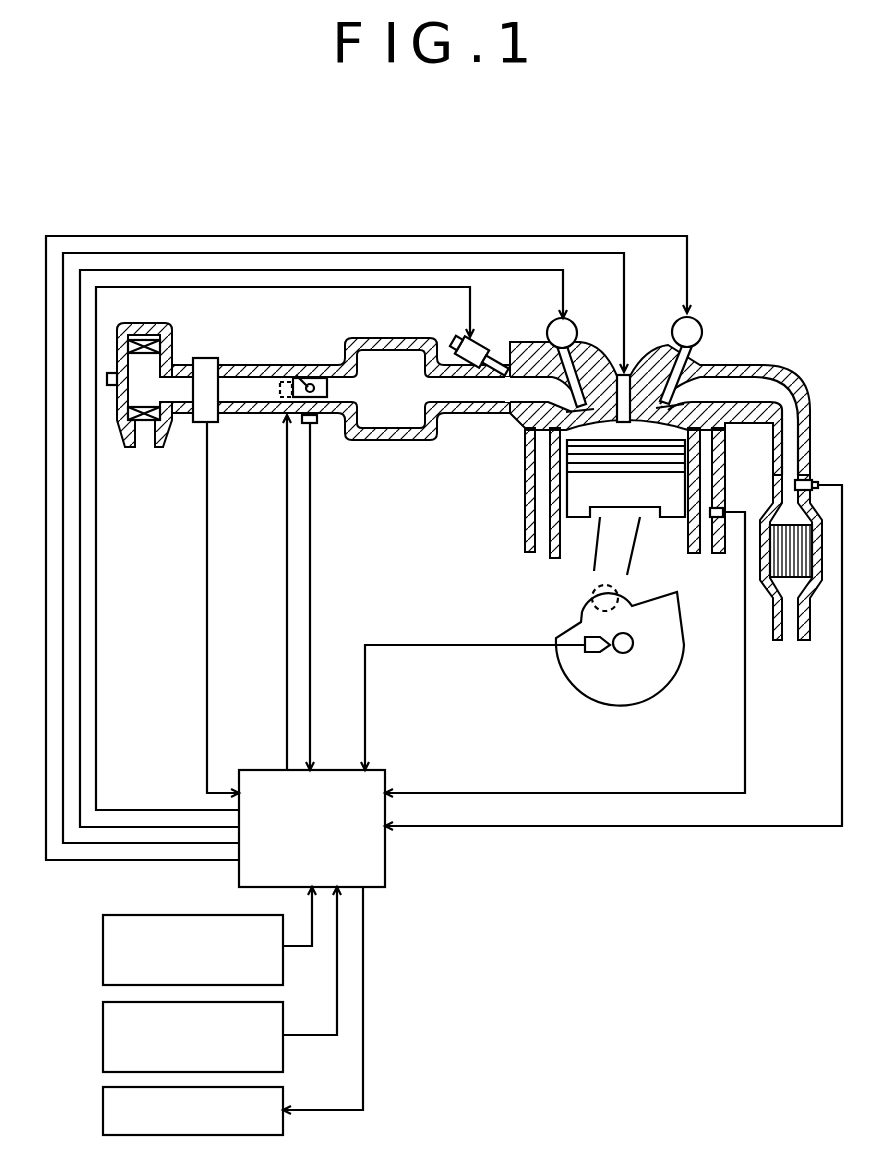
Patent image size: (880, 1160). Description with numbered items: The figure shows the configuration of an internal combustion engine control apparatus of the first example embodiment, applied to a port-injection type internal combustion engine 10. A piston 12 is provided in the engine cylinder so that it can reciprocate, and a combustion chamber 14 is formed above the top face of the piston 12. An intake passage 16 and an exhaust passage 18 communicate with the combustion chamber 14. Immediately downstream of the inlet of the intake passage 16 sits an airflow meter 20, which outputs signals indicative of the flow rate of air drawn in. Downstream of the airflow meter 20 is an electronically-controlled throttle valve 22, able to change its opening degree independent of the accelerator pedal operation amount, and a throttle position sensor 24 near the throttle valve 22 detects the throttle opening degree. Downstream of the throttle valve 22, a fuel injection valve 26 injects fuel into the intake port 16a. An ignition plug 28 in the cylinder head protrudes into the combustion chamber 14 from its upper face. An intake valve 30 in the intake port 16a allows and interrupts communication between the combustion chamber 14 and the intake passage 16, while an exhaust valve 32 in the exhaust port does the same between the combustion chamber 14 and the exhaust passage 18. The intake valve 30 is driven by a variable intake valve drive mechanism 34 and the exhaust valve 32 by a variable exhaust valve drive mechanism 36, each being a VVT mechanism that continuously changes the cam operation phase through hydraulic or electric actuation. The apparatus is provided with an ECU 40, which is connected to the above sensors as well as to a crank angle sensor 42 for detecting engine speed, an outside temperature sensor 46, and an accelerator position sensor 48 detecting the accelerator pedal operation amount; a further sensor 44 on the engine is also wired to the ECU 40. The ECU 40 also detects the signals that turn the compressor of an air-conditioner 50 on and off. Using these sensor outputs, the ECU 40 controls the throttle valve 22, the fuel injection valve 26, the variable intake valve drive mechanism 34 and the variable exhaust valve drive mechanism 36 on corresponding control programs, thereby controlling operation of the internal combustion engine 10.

The internal combustion engine 10 is at (511, 511).
The piston 12 is at (532, 475).
The combustion chamber 14 is at (702, 438).
The intake passage 16 is at (370, 367).
The intake port 16a is at (590, 368).
The exhaust passage 18 is at (788, 423).
The airflow meter 20 is at (210, 365).
The throttle valve 22 is at (295, 376).
The throttle position sensor 24 is at (318, 425).
The fuel injection valve 26 is at (480, 345).
The ignition plug 28 is at (633, 368).
The intake valve 30 is at (527, 345).
The exhaust valve 32 is at (710, 362).
The variable intake valve drive mechanism 34 is at (572, 320).
The variable exhaust valve drive mechanism 36 is at (697, 318).
The ECU 40 is at (388, 772).
The crank angle sensor 42 is at (597, 652).
The coolant temperature sensor 44 is at (733, 512).
The outside temperature sensor 46 is at (103, 946).
The accelerator position sensor 48 is at (103, 1028).
The air-conditioner 50 is at (103, 1101).